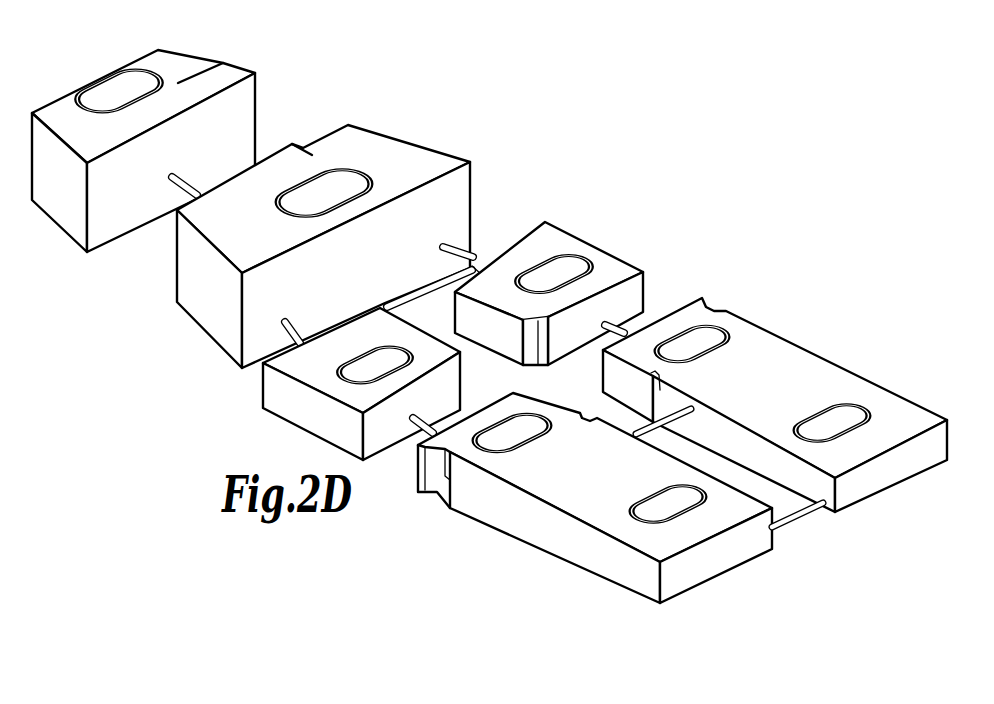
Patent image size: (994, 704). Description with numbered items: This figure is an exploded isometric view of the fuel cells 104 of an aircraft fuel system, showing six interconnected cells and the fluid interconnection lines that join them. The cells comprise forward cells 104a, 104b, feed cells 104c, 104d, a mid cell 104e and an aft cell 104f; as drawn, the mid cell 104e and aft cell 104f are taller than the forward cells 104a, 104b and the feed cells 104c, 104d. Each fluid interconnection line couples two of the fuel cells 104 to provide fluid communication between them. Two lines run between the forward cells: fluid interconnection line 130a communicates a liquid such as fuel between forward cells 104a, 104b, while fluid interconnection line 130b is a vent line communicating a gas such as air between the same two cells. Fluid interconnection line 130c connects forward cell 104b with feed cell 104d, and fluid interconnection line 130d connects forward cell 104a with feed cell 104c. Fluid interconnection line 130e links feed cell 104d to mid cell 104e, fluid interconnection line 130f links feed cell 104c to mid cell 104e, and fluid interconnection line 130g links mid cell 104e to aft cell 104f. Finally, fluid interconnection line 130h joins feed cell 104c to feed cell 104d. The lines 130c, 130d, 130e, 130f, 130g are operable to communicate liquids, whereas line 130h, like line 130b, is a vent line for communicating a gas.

The fuel cells 104 is at (705, 590).
The forward cell 104a is at (528, 527).
The forward cell 104b is at (792, 367).
The feed cell 104c is at (291, 413).
The feed cell 104d is at (570, 245).
The mid cell 104e is at (360, 148).
The aft cell 104f is at (175, 78).
The fluid interconnection line 130a is at (790, 522).
The fluid interconnection line 130b is at (634, 436).
The fluid interconnection line 130c is at (608, 326).
The fluid interconnection line 130d is at (413, 423).
The fluid interconnection line 130e is at (458, 243).
The fluid interconnection line 130f is at (284, 333).
The fluid interconnection line 130g is at (172, 183).
The fluid interconnection line 130h is at (417, 300).